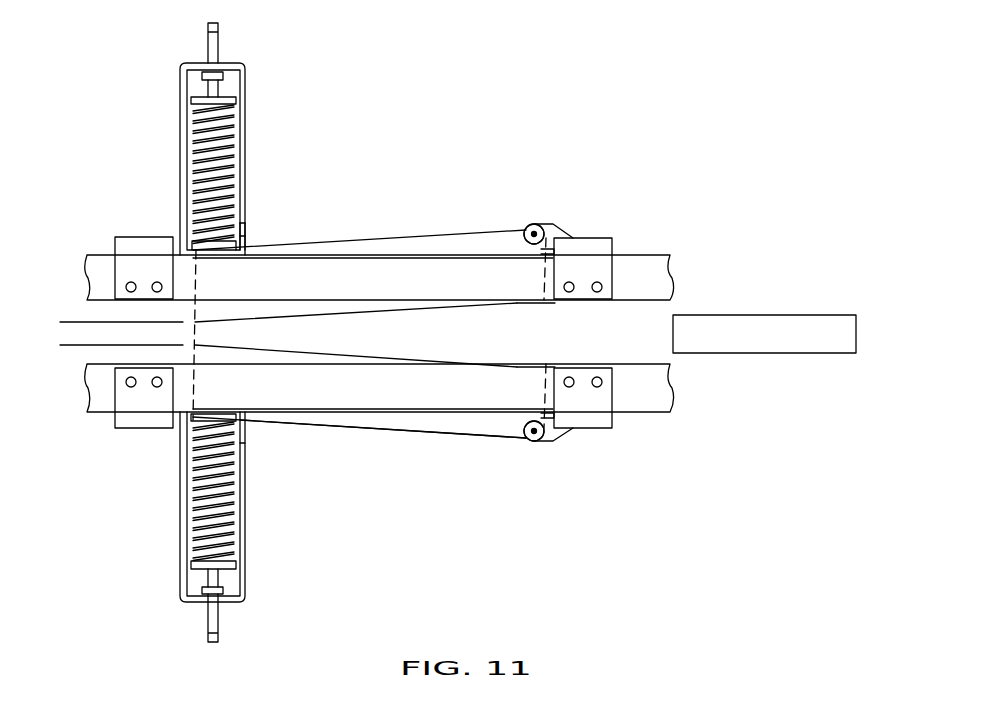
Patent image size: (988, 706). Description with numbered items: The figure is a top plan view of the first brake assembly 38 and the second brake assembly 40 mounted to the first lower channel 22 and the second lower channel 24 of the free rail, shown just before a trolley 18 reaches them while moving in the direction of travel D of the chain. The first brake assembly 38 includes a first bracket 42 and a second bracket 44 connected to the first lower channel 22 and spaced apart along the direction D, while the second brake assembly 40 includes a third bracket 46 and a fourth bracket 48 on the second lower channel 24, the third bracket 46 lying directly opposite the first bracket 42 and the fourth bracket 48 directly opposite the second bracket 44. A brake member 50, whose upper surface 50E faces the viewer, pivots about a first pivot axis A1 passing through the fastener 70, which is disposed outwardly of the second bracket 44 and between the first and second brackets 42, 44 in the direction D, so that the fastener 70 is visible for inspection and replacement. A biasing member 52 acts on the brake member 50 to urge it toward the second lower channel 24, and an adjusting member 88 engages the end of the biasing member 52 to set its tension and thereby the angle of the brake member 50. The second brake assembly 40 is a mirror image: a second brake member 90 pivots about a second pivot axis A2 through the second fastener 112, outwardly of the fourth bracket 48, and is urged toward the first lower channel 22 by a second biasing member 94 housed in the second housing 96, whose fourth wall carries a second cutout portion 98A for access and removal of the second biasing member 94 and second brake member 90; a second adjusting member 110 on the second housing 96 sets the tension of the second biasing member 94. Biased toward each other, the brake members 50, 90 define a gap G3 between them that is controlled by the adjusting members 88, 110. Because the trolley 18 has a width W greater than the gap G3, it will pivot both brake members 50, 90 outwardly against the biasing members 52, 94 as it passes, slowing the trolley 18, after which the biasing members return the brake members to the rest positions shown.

The trolley 18 is at (802, 355).
The first lower channel 22 is at (85, 393).
The second lower channel 24 is at (85, 266).
The first brake assembly 38 is at (349, 527).
The second brake assembly 40 is at (343, 133).
The first bracket 42 is at (137, 431).
The second bracket 44 is at (597, 431).
The third bracket 46 is at (141, 235).
The fourth bracket 48 is at (596, 234).
The brake member 50 is at (348, 430).
The upper surface of the brake member 50E is at (430, 420).
The biasing member 52 is at (192, 503).
The fastener (pivot pin) 70 is at (534, 444).
The adjusting member 88 is at (205, 626).
The second brake member 90 is at (365, 236).
The second biasing member 94 is at (192, 158).
The second housing 96 is at (248, 86).
The second cutout portion 98A is at (246, 237).
The second adjusting member 110 is at (206, 27).
The second fastener (pivot pin) 112 is at (536, 226).
The first pivot axis A1 is at (524, 431).
The second pivot axis A2 is at (524, 238).
The direction of travel D is at (800, 289).
The gap G3 is at (71, 368).
The trolley width W is at (895, 275).